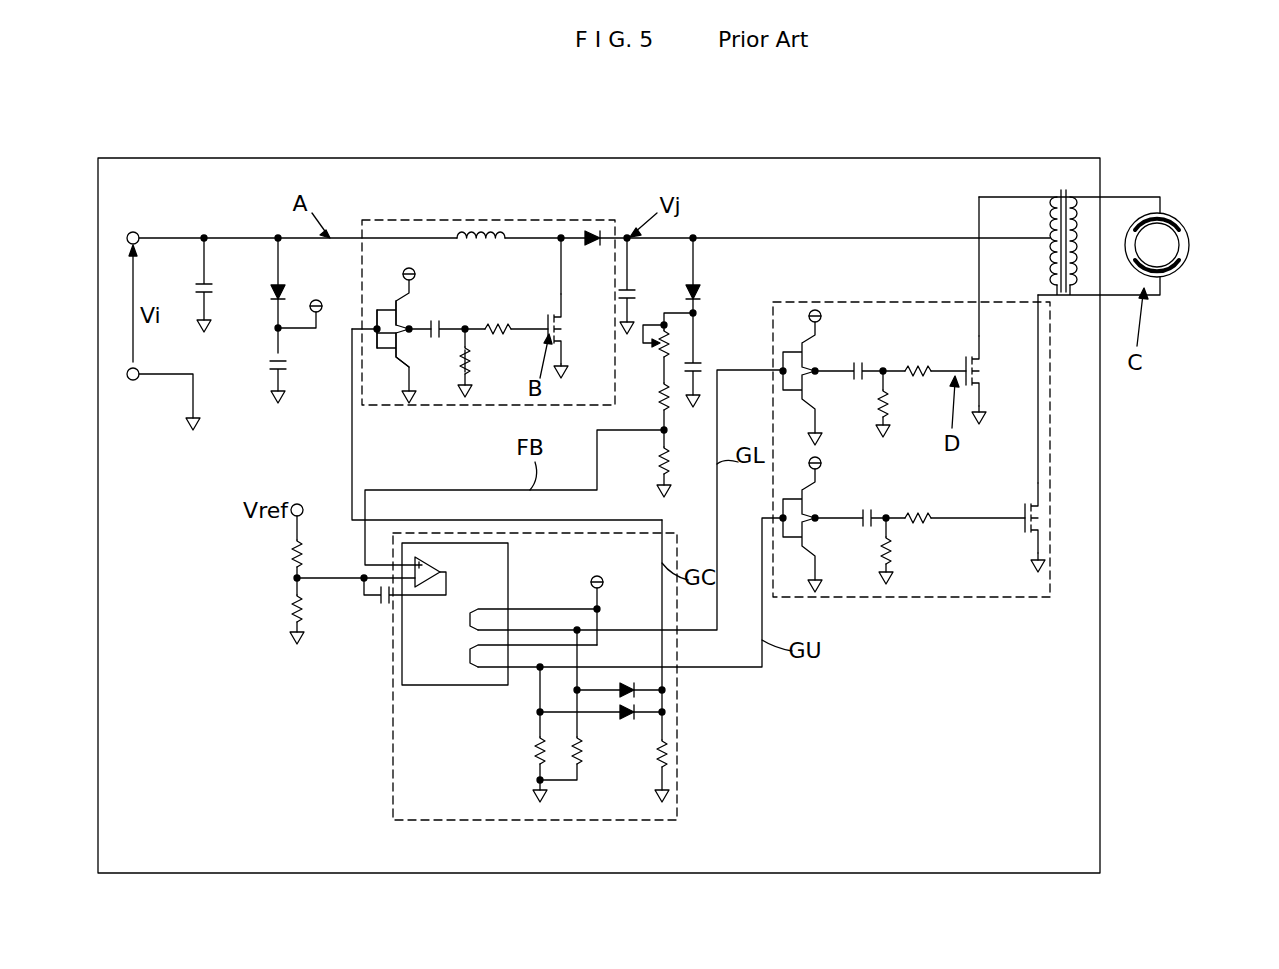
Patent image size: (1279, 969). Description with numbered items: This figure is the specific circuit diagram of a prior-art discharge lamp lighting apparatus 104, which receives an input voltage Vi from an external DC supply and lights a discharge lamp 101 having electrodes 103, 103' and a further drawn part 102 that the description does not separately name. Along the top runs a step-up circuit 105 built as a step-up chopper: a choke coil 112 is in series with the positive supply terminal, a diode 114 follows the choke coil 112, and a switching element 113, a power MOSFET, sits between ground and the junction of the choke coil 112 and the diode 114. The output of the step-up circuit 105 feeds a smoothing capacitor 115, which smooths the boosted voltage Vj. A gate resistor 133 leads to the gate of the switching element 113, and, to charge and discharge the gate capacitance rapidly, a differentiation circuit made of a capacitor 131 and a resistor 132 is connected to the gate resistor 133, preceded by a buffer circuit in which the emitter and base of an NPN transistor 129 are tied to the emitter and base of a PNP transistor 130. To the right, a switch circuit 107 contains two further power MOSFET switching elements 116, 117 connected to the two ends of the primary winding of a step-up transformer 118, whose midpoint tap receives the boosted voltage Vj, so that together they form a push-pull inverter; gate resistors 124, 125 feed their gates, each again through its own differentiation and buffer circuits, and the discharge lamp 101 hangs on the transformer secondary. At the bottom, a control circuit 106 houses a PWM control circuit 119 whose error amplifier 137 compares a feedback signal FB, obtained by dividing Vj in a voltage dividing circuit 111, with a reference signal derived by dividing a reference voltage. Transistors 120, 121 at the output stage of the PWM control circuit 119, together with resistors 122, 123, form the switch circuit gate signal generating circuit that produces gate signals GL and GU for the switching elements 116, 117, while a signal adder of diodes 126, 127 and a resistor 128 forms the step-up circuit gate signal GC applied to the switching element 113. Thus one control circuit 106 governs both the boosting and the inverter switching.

The discharge lamp 101 is at (1172, 288).
The lamp tube 102 is at (1181, 247).
The electrode 103 is at (1173, 193).
The electrode 103' is at (1194, 282).
The discharge lamp lighting apparatus 104 is at (772, 158).
The step-up circuit 105 is at (408, 220).
The control circuit 106 is at (393, 778).
The switch circuit 107 is at (1050, 425).
The voltage dividing circuit 111 is at (208, 283).
The choke coil 112 is at (479, 236).
The switching element 113 is at (562, 323).
The diode 114 is at (594, 236).
The smoothing capacitor 115 is at (633, 292).
The switching element 116 is at (980, 364).
The switching element 117 is at (1040, 512).
The step-up transformer 118 is at (1063, 296).
The PWM control circuit 119 is at (426, 685).
The transistor 120 is at (468, 618).
The transistor 121 is at (468, 654).
The resistor 122 is at (534, 749).
The resistor 123 is at (584, 749).
The gate resistor 124 is at (913, 378).
The gate resistor 125 is at (913, 512).
The diode 126 is at (640, 684).
The diode 127 is at (640, 708).
The resistor 128 is at (668, 752).
The NPN transistor 129 is at (412, 302).
The PNP transistor 130 is at (404, 347).
The capacitor 131 is at (442, 329).
The resistor 132 is at (471, 362).
The gate resistor 133 is at (498, 324).
The error amplifier 137 is at (443, 565).